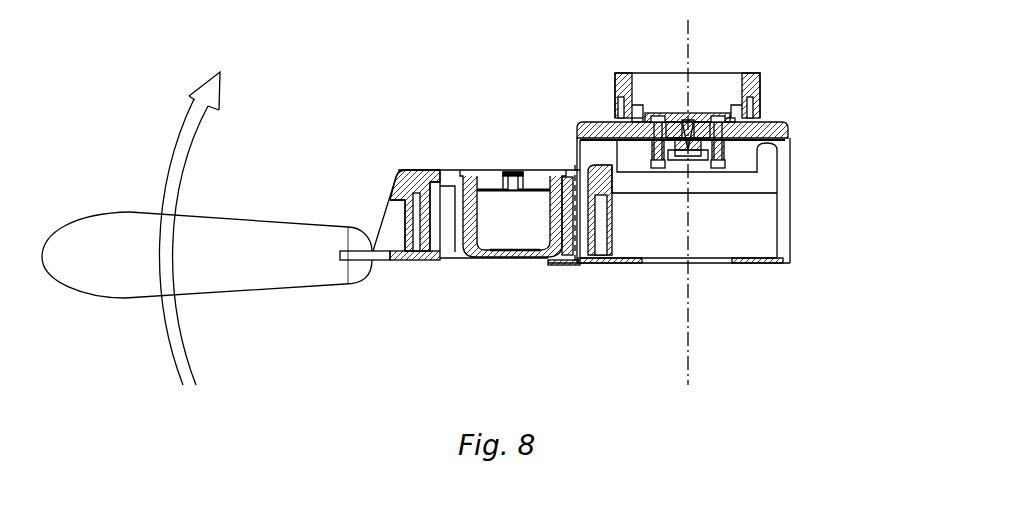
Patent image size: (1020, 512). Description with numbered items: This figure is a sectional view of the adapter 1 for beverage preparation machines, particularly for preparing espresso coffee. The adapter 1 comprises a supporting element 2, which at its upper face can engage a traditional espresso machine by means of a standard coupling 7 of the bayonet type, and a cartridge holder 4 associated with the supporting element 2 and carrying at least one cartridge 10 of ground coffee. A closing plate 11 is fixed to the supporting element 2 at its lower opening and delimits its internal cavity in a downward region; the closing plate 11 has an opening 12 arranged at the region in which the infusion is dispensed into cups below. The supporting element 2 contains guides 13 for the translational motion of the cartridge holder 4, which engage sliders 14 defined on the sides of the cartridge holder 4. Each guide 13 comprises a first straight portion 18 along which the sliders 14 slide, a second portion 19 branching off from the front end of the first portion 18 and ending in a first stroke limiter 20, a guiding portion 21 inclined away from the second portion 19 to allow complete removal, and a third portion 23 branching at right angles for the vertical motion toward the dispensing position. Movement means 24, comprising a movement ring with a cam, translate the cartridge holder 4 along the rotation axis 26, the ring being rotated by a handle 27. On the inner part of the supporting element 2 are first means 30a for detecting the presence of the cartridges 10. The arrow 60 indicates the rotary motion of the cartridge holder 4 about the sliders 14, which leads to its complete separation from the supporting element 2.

The adapter 1 is at (172, 128).
The supporting element 2 is at (793, 238).
The cartridge holder 4 is at (412, 165).
The standard coupling 7 is at (762, 100).
The cartridge 10 is at (487, 165).
The closing plate 11 is at (763, 266).
The opening 12 is at (725, 265).
The guide 13 is at (658, 195).
The slider 14 is at (589, 177).
The first straight portion 18 is at (733, 185).
The second portion 19 is at (607, 174).
The first stroke limiter 20 is at (583, 176).
The guiding portion 21 is at (572, 258).
The third portion 23 is at (762, 163).
The movement means 24 is at (512, 258).
The rotation axis 26 is at (687, 33).
The handle 27 is at (255, 240).
The first means for detecting the presence of the cartridges 30a is at (700, 170).
The arrow 60 is at (183, 353).